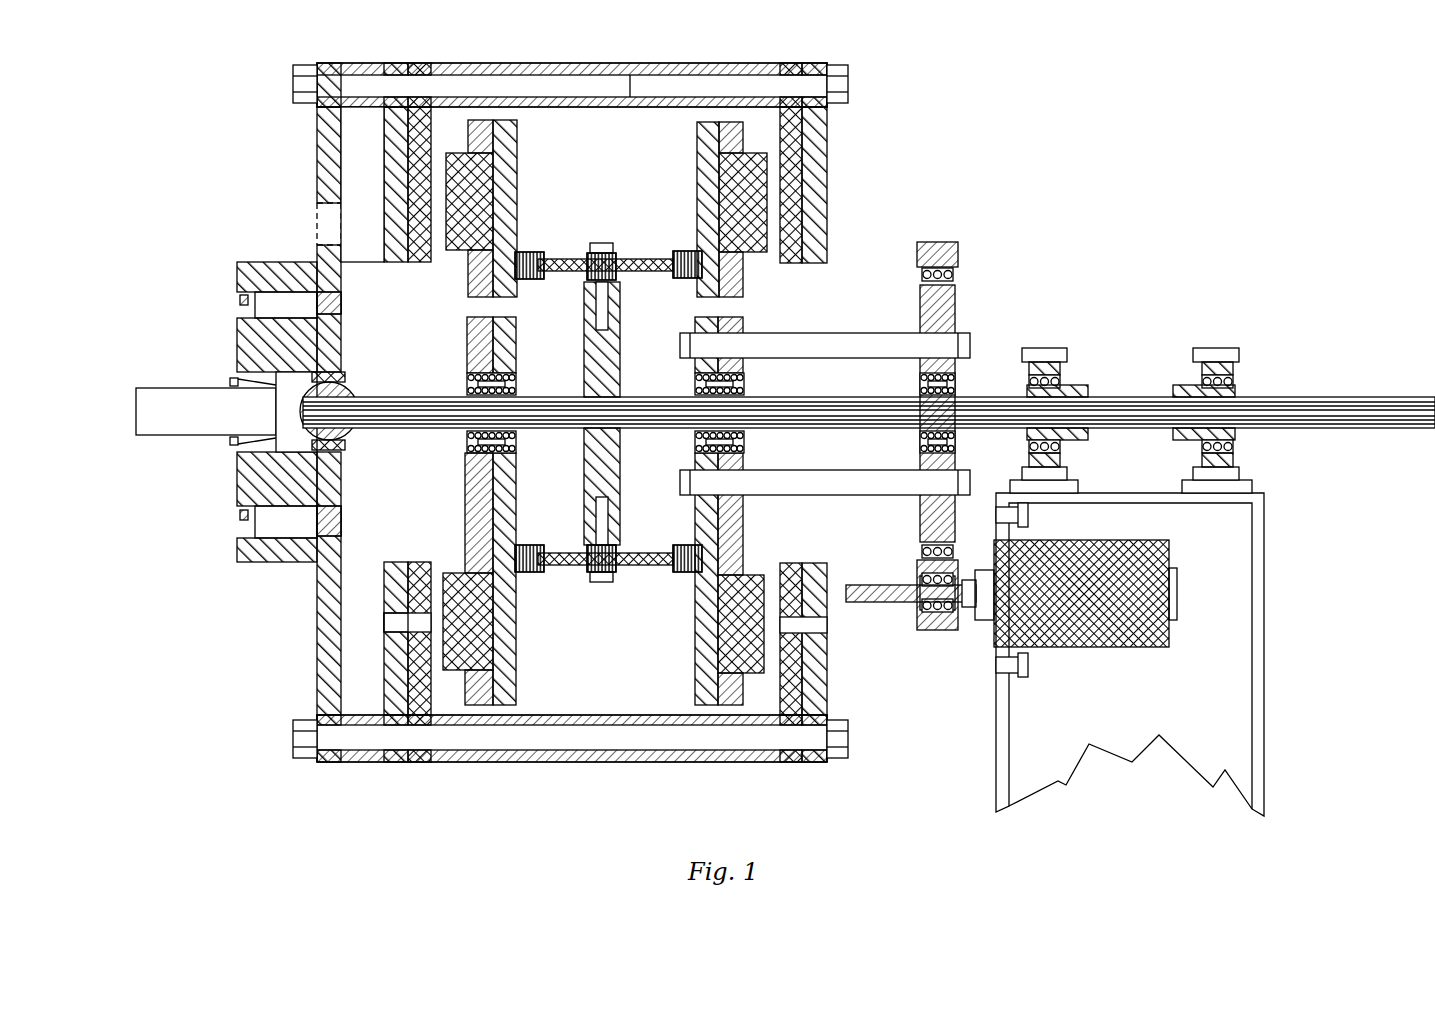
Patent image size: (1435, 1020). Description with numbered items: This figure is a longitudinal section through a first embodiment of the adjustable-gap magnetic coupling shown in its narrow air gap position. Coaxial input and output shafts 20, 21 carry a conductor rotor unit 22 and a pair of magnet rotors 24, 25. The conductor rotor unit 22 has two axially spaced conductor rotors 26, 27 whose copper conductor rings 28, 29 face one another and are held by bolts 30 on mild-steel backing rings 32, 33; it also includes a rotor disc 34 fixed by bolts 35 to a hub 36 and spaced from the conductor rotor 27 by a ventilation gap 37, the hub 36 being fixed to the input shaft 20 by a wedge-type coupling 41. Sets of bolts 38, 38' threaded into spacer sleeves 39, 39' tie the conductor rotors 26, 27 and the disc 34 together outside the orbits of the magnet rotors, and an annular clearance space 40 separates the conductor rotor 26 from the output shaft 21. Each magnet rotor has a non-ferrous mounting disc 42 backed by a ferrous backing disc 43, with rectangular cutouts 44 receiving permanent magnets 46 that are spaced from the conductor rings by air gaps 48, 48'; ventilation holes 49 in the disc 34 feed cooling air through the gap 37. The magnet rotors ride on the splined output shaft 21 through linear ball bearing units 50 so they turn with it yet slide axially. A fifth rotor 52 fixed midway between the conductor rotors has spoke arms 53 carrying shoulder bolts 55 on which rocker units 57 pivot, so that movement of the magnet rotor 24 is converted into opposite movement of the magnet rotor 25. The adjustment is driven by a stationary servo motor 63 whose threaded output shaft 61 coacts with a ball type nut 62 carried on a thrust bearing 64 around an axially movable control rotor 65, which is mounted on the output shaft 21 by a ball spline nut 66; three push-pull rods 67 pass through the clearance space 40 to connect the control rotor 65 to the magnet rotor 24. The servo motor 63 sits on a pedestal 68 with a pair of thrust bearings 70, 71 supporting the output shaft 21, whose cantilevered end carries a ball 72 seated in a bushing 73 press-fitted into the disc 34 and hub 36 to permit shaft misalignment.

The input shaft 20 is at (185, 395).
The output shaft 21 is at (1370, 405).
The conductor rotor unit 22 is at (545, 411).
The magnet rotor 24 is at (692, 186).
The magnet rotor 25 is at (522, 176).
The conductor rotor 26 is at (836, 134).
The conductor rotor 27 is at (375, 185).
The conductor ring 28 is at (795, 65).
The conductor ring 29 is at (425, 70).
The bolt 30 is at (390, 620).
The backing ring 32 is at (824, 170).
The backing ring 33 is at (395, 263).
The rotor disc 34 is at (320, 152).
The bolt 35 is at (245, 293).
The hub 36 is at (248, 481).
The ventilation gap 37 is at (358, 122).
The bolt 38 is at (267, 411).
The bolt 38' is at (877, 411).
The spacer sleeve 39 is at (572, 63).
The spacer sleeve 39' is at (572, 764).
The annular clearance space 40 is at (1001, 526).
The wedge-type coupling 41 is at (248, 440).
The mounting disc 42 is at (478, 340).
The backing disc 43 is at (514, 335).
The cutout 44 is at (447, 265).
The permanent magnet 46 is at (452, 578).
The air gap 48 is at (757, 236).
The air gap 48' is at (599, 687).
The ventilation hole 49 is at (320, 232).
The linear ball bearing unit 50 is at (517, 443).
The fifth rotor 52 is at (584, 362).
The spoke arm 53 is at (596, 290).
The shoulder bolt 55 is at (600, 243).
The rocker unit 57 is at (575, 580).
The output shaft of servo motor 61 is at (865, 604).
The ball type nut 62 is at (957, 612).
The servo motor 63 is at (1100, 648).
The thrust bearing 64 is at (920, 552).
The control rotor 65 is at (922, 520).
The ball spline nut 66 is at (920, 388).
The push-pull rod 67 is at (850, 345).
The pedestal 68 is at (957, 330).
The thrust bearing 70 is at (1062, 375).
The thrust bearing 71 is at (1240, 380).
The ball 72 is at (358, 437).
The bushing 73 is at (345, 374).